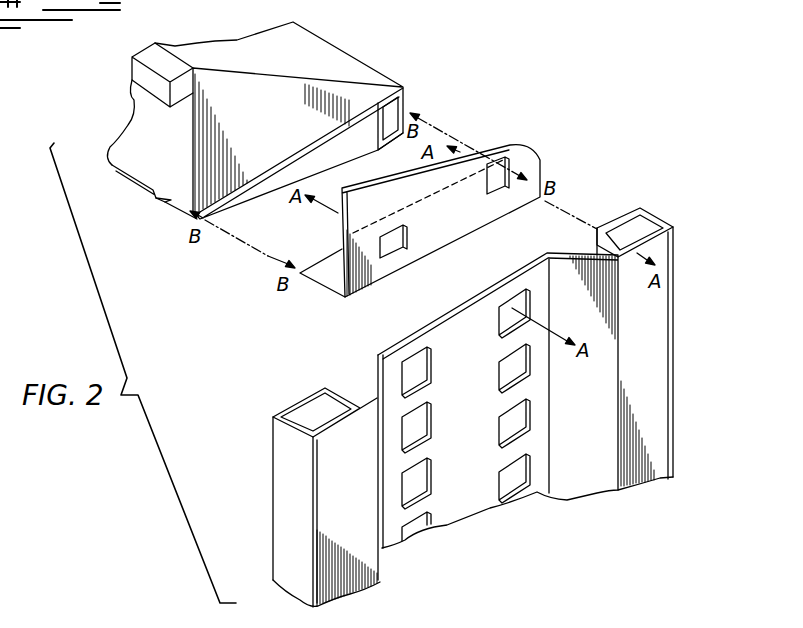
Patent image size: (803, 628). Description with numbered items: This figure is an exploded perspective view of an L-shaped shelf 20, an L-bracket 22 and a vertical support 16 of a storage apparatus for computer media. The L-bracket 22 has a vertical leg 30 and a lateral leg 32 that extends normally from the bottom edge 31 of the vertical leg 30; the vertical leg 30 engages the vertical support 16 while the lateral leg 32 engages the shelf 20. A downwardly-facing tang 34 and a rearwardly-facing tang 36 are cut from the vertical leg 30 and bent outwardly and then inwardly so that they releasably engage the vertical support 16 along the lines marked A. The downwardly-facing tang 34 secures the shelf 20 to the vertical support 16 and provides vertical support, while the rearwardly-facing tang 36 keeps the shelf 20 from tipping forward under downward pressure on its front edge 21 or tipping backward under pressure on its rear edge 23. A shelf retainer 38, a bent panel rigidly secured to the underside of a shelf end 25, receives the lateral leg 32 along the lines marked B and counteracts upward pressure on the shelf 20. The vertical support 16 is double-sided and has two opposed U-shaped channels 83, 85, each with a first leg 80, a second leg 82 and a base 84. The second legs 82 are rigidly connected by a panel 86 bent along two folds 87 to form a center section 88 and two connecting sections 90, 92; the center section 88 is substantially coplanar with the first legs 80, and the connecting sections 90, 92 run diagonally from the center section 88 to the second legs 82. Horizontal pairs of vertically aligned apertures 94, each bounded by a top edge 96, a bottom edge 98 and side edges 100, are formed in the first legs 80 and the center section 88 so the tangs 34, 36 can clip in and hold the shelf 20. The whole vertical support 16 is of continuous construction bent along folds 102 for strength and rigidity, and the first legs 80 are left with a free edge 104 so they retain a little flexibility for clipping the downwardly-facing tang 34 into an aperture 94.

The vertical support 16 is at (544, 519).
The shelf 20 is at (135, 127).
The front edge 21 is at (317, 42).
The L-bracket 22 is at (491, 120).
The rear edge 23 is at (110, 164).
The shelf end 25 is at (403, 88).
The vertical leg 30 is at (378, 262).
The bottom edge 31 is at (352, 296).
The lateral leg 32 is at (323, 263).
The downwardly-facing tang 34 is at (510, 161).
The rearwardly-facing tang 36 is at (405, 246).
The shelf retainer 38 is at (158, 201).
The first leg 80 is at (305, 397).
The second leg 82 is at (377, 570).
The U-shaped channel 83 is at (686, 408).
The base 84 is at (273, 441).
The U-shaped channel 85 is at (252, 562).
The panel 86 is at (488, 522).
The fold 87 is at (550, 424).
The center section 88 is at (457, 498).
The connecting section 90 is at (378, 380).
The connecting section 92 is at (580, 479).
The aperture 94 is at (500, 325).
The top edge 96 is at (415, 406).
The bottom edge 98 is at (427, 437).
The side edge 100 is at (430, 418).
The fold 102 is at (634, 210).
The free edge 104 is at (336, 398).